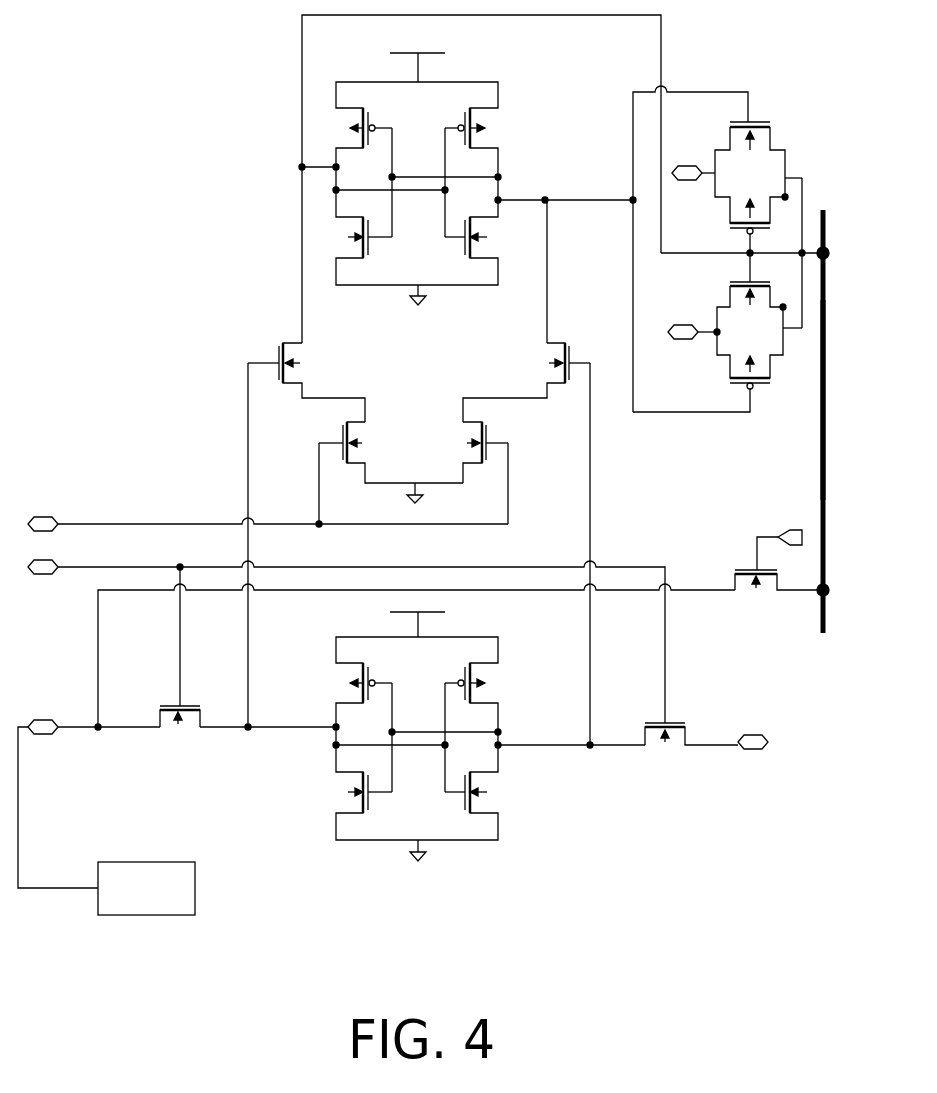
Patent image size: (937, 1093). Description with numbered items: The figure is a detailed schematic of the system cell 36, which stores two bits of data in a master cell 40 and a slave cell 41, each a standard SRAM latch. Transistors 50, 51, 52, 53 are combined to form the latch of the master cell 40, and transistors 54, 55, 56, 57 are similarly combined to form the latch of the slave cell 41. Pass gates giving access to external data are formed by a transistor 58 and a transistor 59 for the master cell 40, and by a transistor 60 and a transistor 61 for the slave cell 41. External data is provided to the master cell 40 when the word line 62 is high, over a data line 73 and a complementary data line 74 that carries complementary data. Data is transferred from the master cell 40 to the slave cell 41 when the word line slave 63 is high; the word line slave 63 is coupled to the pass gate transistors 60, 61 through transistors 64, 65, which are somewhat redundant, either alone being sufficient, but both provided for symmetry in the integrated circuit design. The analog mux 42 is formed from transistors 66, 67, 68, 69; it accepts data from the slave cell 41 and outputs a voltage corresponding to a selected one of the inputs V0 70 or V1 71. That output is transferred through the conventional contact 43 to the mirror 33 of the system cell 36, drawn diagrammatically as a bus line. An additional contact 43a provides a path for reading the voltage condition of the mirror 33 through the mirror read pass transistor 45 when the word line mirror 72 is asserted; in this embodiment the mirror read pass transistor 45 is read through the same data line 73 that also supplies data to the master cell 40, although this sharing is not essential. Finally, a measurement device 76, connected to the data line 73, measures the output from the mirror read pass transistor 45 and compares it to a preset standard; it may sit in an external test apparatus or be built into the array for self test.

The mirror 33 is at (823, 455).
The system cell 36 is at (140, 190).
The master cell 40 is at (520, 628).
The slave cell 41 is at (518, 66).
The analog mux 42 is at (790, 113).
The contact 43 is at (824, 248).
The additional contact 43a is at (820, 595).
The mirror read pass transistor 45 is at (742, 578).
The transistor 50 is at (362, 793).
The transistor 51 is at (475, 793).
The transistor 52 is at (362, 683).
The transistor 53 is at (475, 686).
The transistor 54 is at (362, 217).
The transistor 55 is at (474, 228).
The transistor 56 is at (363, 108).
The transistor 57 is at (472, 132).
The transistor 58 is at (170, 714).
The transistor 59 is at (652, 730).
The transistor 60 is at (287, 345).
The transistor 61 is at (562, 350).
The word line 62 is at (48, 577).
The word line slave 63 is at (43, 517).
The transistor 64 is at (352, 432).
The transistor 65 is at (484, 425).
The transistor 66 is at (758, 388).
The transistor 67 is at (730, 290).
The transistor 68 is at (755, 220).
The transistor 69 is at (765, 120).
The input V0 70 is at (685, 341).
The input V1 71 is at (688, 182).
The word line mirror 72 is at (790, 530).
The data line 73 is at (46, 736).
The complementary data line 74 is at (765, 735).
The measurement device 76 is at (146, 888).